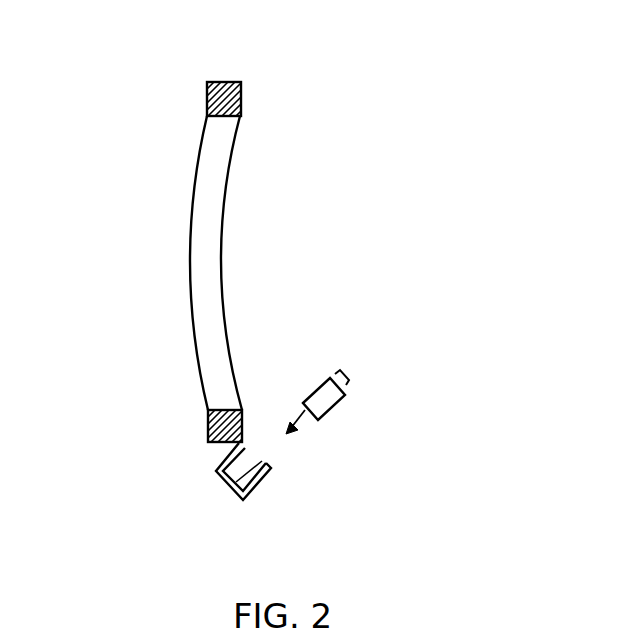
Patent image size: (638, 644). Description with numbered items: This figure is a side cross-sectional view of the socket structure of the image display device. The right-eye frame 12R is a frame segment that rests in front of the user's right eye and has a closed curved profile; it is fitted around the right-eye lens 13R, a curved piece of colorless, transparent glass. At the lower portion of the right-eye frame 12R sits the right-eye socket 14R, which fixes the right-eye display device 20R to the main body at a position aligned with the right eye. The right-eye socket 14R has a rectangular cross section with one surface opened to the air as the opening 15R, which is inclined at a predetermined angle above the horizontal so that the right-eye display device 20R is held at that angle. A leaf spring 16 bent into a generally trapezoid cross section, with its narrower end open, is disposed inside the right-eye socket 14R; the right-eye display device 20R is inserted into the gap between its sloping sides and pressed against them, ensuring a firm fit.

The right-eye frame 12R is at (226, 82).
The right-eye lens 13R is at (192, 242).
The right-eye socket 14R is at (246, 500).
The opening 15R is at (267, 465).
The leaf spring 16 is at (248, 453).
The right-eye display device 20R is at (343, 402).